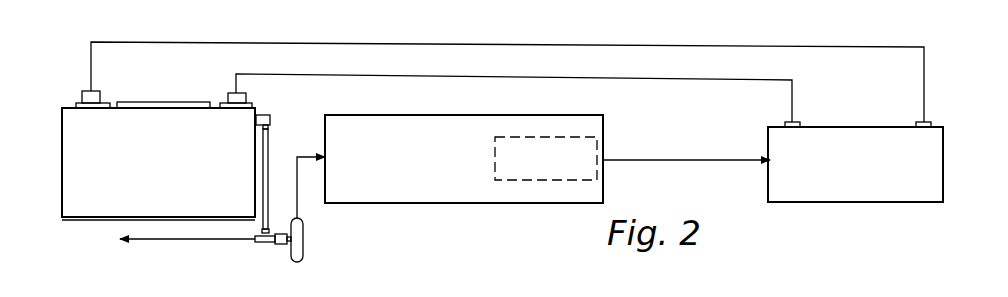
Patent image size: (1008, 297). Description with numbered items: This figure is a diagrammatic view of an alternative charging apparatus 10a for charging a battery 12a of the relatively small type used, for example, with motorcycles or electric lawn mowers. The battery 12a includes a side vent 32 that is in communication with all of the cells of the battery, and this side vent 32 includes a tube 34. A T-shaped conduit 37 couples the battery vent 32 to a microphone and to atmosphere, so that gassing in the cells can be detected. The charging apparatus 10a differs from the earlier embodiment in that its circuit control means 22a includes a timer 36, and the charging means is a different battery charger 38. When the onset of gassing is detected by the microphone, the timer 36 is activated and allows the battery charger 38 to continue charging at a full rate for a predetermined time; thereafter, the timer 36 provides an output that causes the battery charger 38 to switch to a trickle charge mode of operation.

The charging apparatus 10a is at (426, 240).
The battery 12a is at (94, 202).
The circuit control means 22a is at (533, 122).
The side vent 32 is at (263, 103).
The tube 34 is at (270, 122).
The timer 36 is at (598, 146).
The T-shaped conduit 37 is at (268, 243).
The battery charger 38 is at (868, 122).